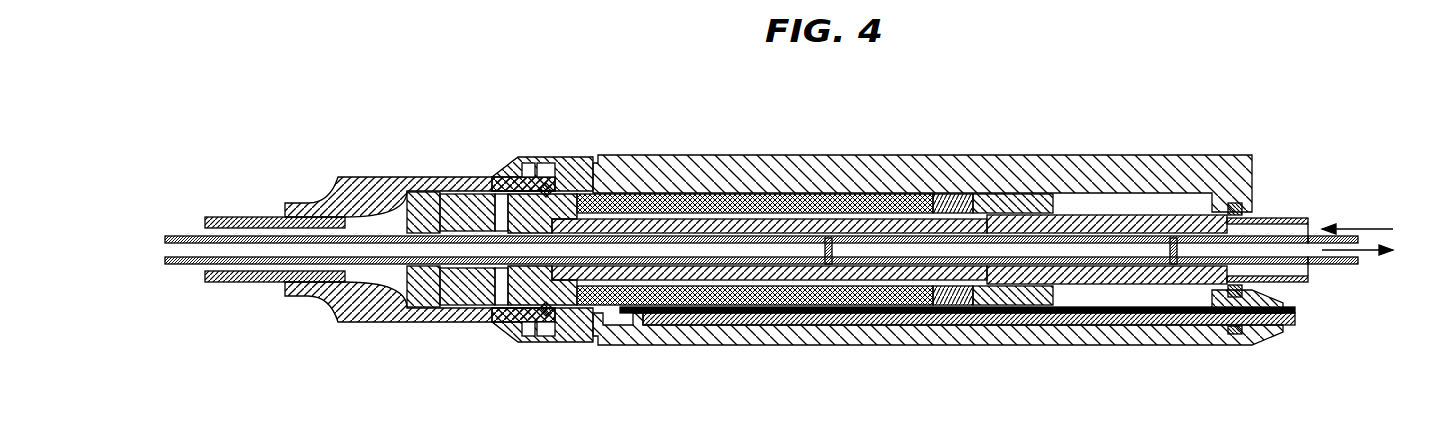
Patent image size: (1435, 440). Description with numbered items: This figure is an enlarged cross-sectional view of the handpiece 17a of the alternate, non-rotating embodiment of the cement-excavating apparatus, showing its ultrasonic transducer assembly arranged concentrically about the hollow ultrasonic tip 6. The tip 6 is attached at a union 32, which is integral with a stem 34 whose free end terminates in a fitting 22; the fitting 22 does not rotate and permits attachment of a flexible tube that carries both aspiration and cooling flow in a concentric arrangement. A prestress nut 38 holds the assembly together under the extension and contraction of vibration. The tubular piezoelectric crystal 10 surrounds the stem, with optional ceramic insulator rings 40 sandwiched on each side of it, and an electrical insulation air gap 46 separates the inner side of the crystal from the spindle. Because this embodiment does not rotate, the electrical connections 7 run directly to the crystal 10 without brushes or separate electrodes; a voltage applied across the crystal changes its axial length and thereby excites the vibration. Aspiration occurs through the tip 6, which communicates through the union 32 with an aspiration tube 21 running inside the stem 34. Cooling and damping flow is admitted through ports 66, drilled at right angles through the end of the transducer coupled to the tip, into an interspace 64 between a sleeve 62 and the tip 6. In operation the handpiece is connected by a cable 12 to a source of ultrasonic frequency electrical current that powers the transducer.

The handpiece 17a is at (928, 103).
The ultrasonic tip 6 is at (187, 234).
The electrical connections 7 is at (623, 312).
The tubular piezoelectric crystal 10 is at (855, 200).
The cable 12 is at (1290, 327).
The aspiration tube 21 is at (1335, 263).
The fitting 22 is at (1290, 219).
The union 32 is at (437, 308).
The stem 34 is at (1120, 218).
The prestress nut 38 is at (1030, 292).
The ceramic insulator rings 40 is at (620, 158).
The electrical insulation air gap 46 is at (807, 282).
The sleeve 62 is at (212, 280).
The interspace 64 is at (370, 215).
The ports 66 is at (502, 292).